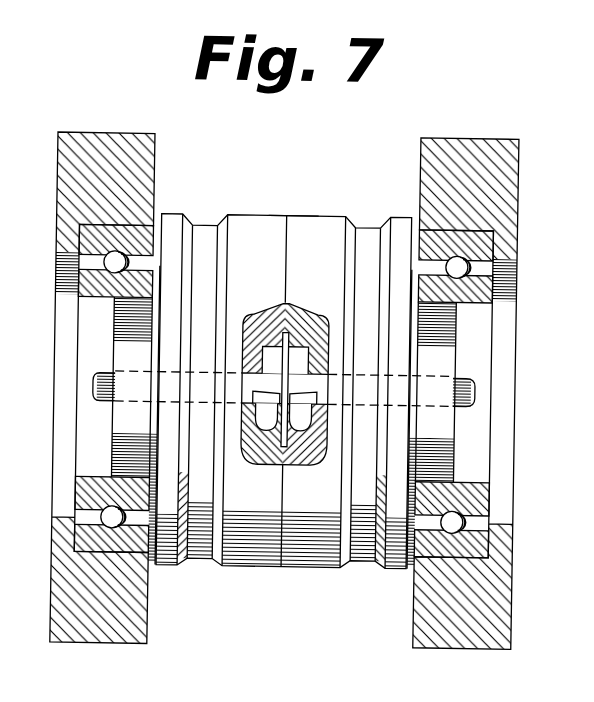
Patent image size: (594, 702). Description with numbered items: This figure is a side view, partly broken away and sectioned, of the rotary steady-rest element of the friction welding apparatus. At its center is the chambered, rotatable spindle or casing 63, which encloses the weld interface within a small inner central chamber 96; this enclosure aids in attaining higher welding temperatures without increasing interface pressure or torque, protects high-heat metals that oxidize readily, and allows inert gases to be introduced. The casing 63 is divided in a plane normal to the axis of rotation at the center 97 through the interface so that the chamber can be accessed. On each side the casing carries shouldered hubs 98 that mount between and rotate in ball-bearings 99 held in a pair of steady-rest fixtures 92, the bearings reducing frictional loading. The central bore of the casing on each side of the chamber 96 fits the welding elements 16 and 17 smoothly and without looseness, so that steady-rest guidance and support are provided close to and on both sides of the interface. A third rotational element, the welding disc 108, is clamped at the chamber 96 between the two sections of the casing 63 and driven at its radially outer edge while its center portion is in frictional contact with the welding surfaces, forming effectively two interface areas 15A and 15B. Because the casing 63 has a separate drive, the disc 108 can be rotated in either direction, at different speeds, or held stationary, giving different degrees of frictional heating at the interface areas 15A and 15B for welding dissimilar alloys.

The interface area 15A is at (255, 465).
The interface area 15B is at (324, 464).
The welding element 16 is at (101, 379).
The welding element 17 is at (466, 381).
The spindle or casing 63 is at (349, 212).
The steady-rest fixture 92 is at (67, 580).
The inner central chamber 96 is at (299, 354).
The center 97 is at (291, 211).
The shouldered hub 98 is at (110, 439).
The ball-bearing 99 is at (87, 280).
The welding disc 108 is at (285, 336).